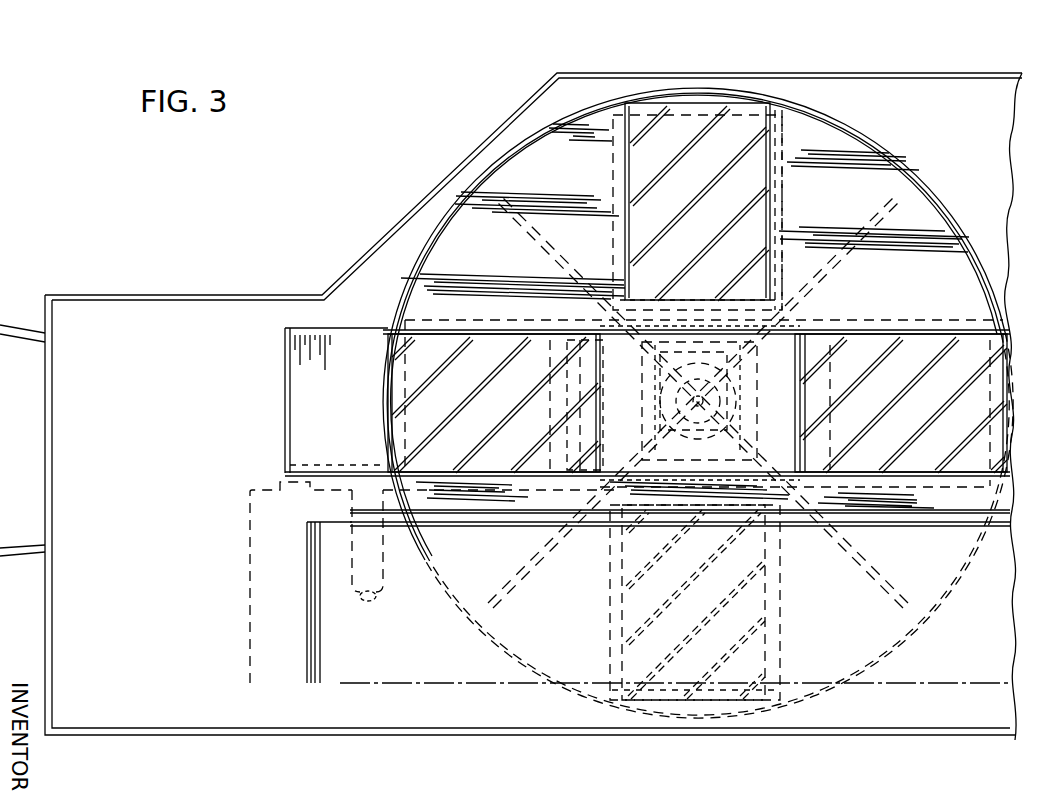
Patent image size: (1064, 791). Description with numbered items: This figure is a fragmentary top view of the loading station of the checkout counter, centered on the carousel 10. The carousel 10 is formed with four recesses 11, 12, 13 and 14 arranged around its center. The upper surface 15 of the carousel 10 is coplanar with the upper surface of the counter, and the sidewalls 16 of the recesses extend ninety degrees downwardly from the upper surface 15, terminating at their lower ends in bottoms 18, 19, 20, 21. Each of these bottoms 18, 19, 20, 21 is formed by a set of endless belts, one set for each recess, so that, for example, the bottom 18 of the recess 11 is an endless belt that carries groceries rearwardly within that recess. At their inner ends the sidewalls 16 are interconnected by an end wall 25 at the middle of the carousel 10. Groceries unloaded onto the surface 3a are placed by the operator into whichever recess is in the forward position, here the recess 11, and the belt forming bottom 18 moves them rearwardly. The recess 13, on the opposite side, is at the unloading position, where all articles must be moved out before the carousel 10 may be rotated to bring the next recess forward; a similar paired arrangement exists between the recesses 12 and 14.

The carousel 10 is at (530, 175).
The recess 11 is at (455, 350).
The recess 12 is at (745, 210).
The recess 13 is at (970, 372).
The recess 14 is at (748, 640).
The upper surface 15 is at (925, 232).
The sidewalls 16 is at (650, 162).
The bottom 18 is at (457, 414).
The bottom 19 is at (700, 242).
The bottom 20 is at (912, 430).
The bottom 21 is at (690, 618).
The end wall 25 is at (600, 452).
The surface 3a is at (168, 451).